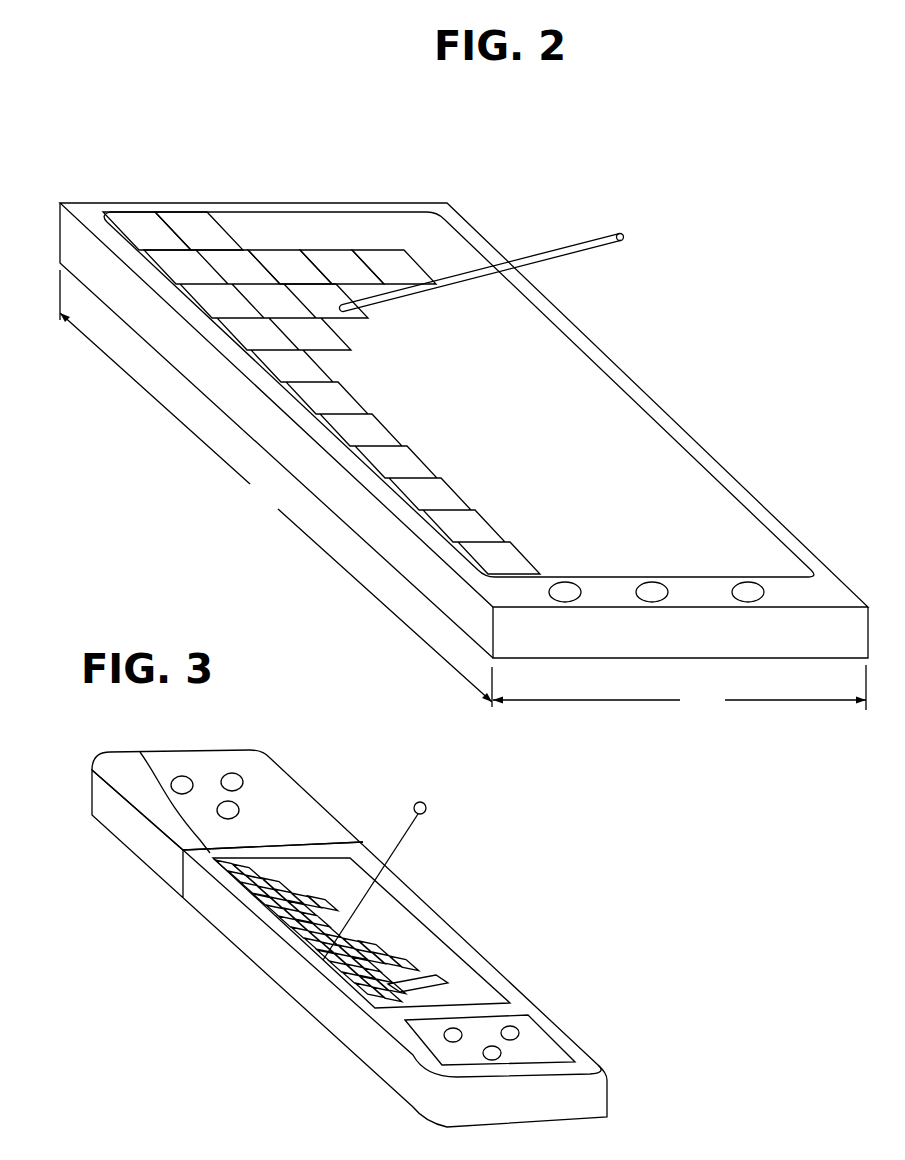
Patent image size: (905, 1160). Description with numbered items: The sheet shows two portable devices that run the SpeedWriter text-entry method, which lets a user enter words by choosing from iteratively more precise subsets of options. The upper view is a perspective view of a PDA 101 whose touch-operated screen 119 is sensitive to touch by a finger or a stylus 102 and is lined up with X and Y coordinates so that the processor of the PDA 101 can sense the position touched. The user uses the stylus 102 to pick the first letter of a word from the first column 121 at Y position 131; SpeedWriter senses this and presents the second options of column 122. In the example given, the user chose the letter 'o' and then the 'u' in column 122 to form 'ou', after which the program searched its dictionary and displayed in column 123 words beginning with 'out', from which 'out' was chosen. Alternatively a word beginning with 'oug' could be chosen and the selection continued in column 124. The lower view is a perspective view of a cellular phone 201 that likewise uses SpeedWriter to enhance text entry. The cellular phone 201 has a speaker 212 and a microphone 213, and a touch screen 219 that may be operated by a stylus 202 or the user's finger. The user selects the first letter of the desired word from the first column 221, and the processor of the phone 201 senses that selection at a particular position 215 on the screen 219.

In FIG. 2, the PDA 101 is at (618, 365).
In FIG. 2, the stylus 102 is at (570, 243).
In FIG. 2, the touch-operated screen 119 is at (622, 470).
In FIG. 2, the first column 121 is at (110, 212).
In FIG. 2, the column 122 is at (172, 212).
In FIG. 2, the column 123 is at (264, 250).
In FIG. 2, the column 124 is at (325, 258).
In FIG. 2, the Y position 131 is at (178, 302).
In FIG. 3, the cellular phone 201 is at (490, 958).
In FIG. 3, the stylus 202 is at (415, 835).
In FIG. 3, the speaker 212 is at (248, 782).
In FIG. 3, the microphone 213 is at (532, 1042).
In FIG. 3, the position 215 is at (327, 958).
In FIG. 3, the touch screen 219 is at (410, 965).
In FIG. 3, the first column 221 is at (213, 858).